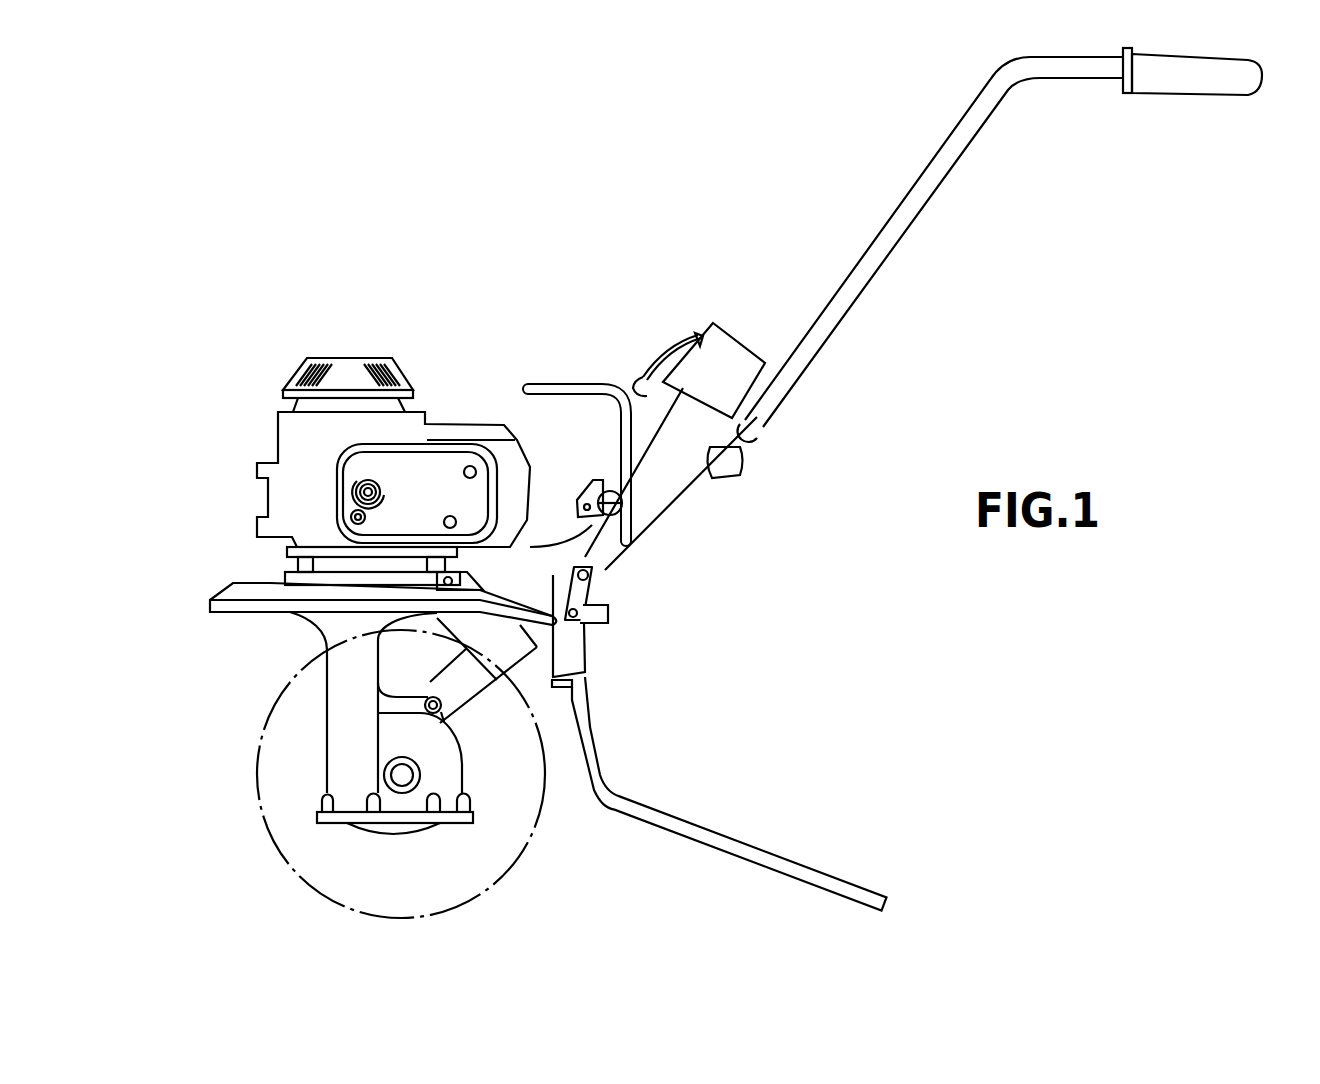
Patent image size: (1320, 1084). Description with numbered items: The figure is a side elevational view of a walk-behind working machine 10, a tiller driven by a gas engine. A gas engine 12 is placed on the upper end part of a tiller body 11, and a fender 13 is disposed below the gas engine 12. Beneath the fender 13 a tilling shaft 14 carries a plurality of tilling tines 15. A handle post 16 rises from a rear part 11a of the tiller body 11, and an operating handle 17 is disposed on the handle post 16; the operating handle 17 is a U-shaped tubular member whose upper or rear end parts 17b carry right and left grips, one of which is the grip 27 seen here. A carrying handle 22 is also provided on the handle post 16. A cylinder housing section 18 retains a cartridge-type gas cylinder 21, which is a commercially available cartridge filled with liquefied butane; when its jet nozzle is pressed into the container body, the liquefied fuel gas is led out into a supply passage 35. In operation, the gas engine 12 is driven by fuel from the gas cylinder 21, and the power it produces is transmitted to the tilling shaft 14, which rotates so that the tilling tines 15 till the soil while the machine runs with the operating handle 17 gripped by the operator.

The walk-behind working machine 10 is at (509, 246).
The tiller body 11 is at (335, 622).
The rear part of the tiller body 11a is at (443, 724).
The gas engine 12 is at (292, 440).
The fender 13 is at (245, 590).
The tilling shaft 14 is at (400, 773).
The tilling tines 15 is at (287, 862).
The handle post 16 is at (651, 539).
The operating handle 17 is at (905, 210).
The upper end part of the operating handle 17b is at (1112, 73).
The cylinder housing section 18 is at (649, 372).
The gas cylinder 21 is at (733, 350).
The carrying handle 22 is at (548, 380).
The grip 27 is at (1217, 80).
The supply passage 35 is at (592, 543).